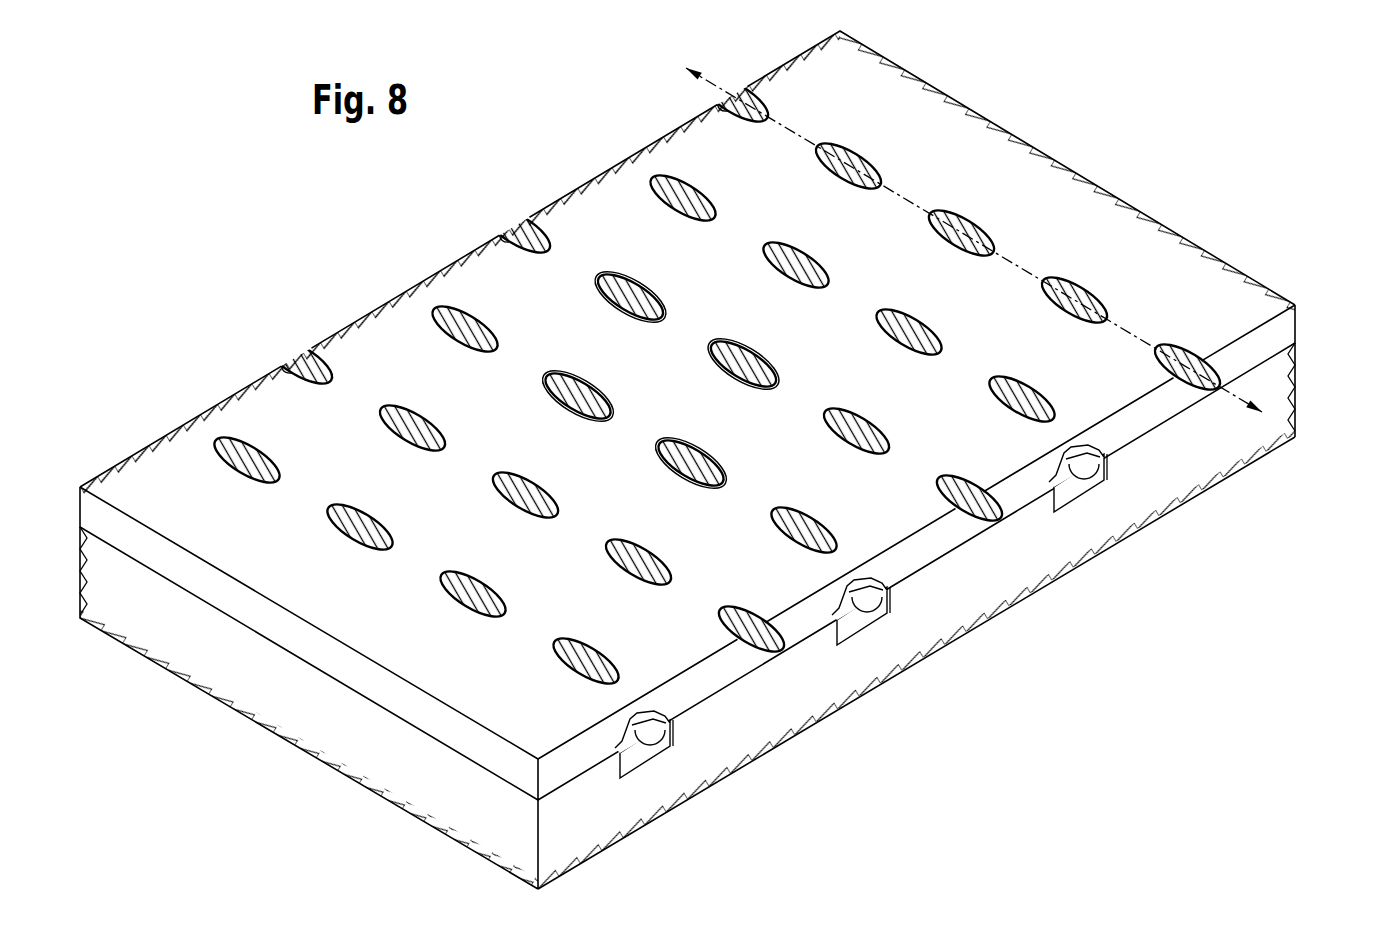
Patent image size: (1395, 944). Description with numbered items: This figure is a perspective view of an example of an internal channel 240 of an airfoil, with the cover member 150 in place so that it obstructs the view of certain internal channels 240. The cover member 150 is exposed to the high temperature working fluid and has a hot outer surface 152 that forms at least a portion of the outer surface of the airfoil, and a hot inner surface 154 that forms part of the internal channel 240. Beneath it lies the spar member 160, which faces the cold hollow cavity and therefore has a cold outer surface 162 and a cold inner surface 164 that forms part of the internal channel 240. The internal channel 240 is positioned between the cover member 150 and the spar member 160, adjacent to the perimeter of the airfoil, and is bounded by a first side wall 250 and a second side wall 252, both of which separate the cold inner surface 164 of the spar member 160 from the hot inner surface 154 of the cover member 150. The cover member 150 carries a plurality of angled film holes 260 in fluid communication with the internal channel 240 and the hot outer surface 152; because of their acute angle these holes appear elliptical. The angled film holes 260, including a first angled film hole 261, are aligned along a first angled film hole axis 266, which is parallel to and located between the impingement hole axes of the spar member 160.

The cover member 150 is at (1287, 329).
The hot outer surface 152 is at (1180, 270).
The hot inner surface 154 is at (643, 741).
The spar member 160 is at (687, 616).
The cold outer surface 162 is at (1120, 542).
The cold inner surface 164 is at (710, 785).
The internal channel 240 is at (878, 618).
The first side wall 250 is at (654, 794).
The second side wall 252 is at (672, 728).
The angled film holes 260 is at (704, 379).
The first angled film hole 261 is at (233, 440).
The first angled film hole axis 266 is at (712, 84).